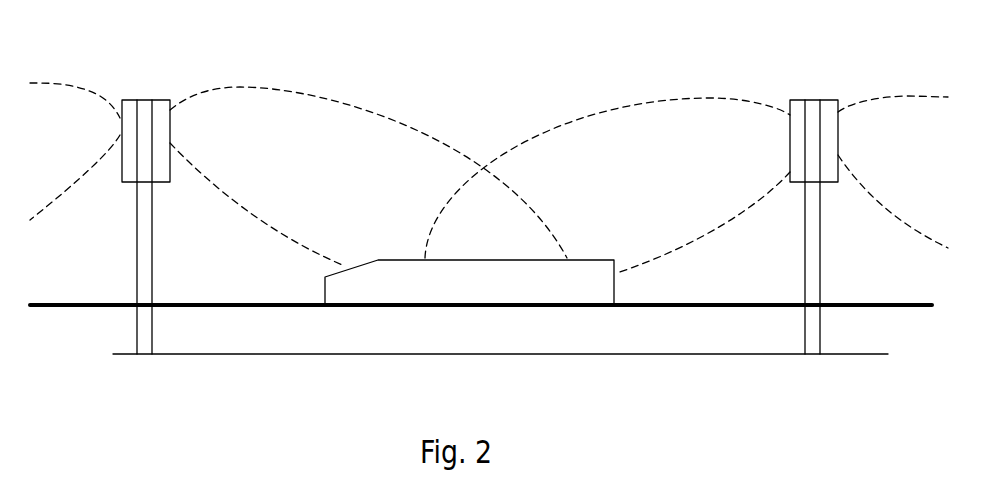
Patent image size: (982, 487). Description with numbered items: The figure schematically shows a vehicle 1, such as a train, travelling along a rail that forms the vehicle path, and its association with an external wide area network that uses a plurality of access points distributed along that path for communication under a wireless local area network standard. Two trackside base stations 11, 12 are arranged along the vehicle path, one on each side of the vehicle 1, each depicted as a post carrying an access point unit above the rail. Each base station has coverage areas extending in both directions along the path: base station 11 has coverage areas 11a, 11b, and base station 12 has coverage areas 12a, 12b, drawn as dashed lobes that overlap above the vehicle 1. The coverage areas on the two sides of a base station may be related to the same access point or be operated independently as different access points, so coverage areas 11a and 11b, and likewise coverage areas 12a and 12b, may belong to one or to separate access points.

The vehicle 1 is at (590, 288).
The trackside base station 11 is at (147, 107).
The coverage area 11a is at (48, 83).
The coverage area 11b is at (336, 93).
The trackside base station 12 is at (810, 97).
The coverage area 12a is at (693, 97).
The coverage area 12b is at (923, 96).